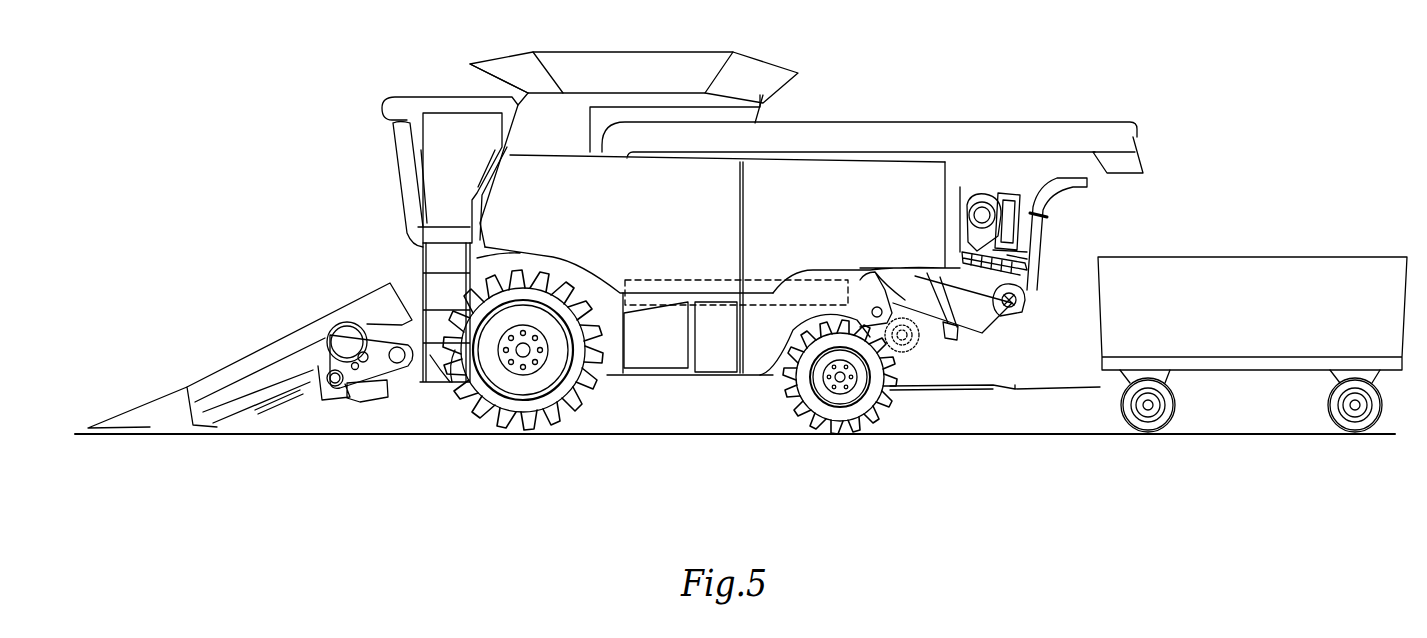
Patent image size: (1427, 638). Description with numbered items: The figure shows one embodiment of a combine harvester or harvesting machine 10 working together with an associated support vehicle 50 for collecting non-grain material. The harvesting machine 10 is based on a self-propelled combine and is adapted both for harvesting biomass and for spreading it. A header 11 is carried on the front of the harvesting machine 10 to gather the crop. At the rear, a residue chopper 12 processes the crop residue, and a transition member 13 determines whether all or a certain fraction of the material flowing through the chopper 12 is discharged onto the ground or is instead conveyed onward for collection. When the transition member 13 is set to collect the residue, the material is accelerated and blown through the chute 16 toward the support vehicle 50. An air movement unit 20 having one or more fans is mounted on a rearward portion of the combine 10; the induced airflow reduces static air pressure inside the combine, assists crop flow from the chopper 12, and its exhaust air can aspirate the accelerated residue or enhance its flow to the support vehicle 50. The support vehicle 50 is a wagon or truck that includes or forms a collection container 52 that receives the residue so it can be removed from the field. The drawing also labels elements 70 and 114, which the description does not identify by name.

The harvesting machine 10 is at (228, 197).
The header 11 is at (260, 348).
The residue chopper 12 is at (903, 317).
The transition member 13 is at (977, 330).
The chute 16 is at (1045, 187).
The air movement unit 20 is at (918, 196).
The support vehicle 50 is at (1097, 277).
The collection container 52 is at (1257, 257).
The tow bar 70 is at (1060, 390).
The pivot joint 114 is at (1058, 318).